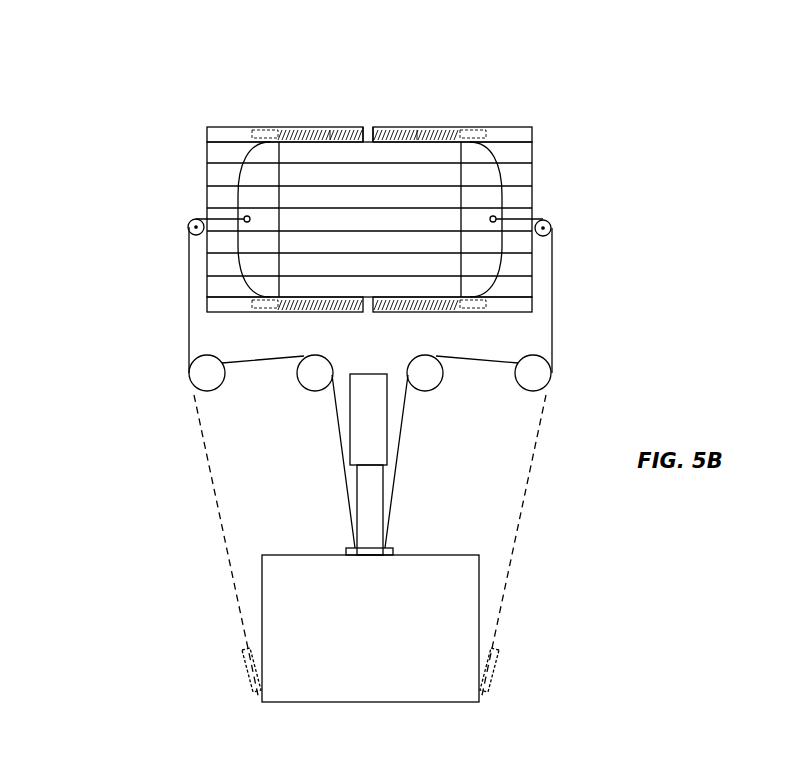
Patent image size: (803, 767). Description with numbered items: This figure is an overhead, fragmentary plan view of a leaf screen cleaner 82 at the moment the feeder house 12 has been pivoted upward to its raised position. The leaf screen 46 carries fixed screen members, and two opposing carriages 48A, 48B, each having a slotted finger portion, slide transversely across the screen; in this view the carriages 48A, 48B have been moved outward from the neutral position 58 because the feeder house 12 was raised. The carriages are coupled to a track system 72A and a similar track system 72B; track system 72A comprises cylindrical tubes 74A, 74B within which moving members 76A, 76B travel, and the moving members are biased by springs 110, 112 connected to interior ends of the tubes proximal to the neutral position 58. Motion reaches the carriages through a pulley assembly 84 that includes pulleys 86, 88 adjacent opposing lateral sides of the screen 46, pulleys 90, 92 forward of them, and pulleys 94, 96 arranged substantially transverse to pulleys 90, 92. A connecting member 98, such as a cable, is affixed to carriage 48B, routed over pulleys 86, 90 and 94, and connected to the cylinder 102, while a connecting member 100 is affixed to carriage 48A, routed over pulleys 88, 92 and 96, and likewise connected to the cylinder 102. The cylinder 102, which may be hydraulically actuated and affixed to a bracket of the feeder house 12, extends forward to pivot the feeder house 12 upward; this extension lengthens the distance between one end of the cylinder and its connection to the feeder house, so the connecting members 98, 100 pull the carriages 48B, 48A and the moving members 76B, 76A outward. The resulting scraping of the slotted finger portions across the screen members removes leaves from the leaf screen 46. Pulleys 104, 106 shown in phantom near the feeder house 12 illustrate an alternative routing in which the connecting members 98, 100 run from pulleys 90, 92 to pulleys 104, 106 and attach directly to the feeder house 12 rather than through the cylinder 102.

The feeder house 12 is at (357, 633).
The leaf screen 46 is at (207, 200).
The carriage 48A is at (492, 177).
The carriage 48B is at (245, 177).
The neutral position 58 is at (370, 112).
The track system 72A is at (546, 137).
The track system 72B is at (562, 307).
The cylindrical tube 74A is at (397, 128).
The cylindrical tube 74B is at (333, 128).
The moving member 76A is at (463, 138).
The moving member 76B is at (263, 135).
The leaf screen cleaner 82 is at (80, 172).
The pulley assembly 84 is at (126, 506).
The pulley 86 is at (190, 230).
The pulley 88 is at (549, 222).
The pulley 90 is at (195, 373).
The pulley 92 is at (545, 377).
The pulley 94 is at (315, 388).
The pulley 96 is at (425, 385).
The connecting member 98 is at (189, 290).
The connecting member 100 is at (553, 287).
The cylinder 102 is at (372, 508).
The pulley 104 is at (247, 668).
The pulley 106 is at (498, 665).
The spring 110 is at (417, 135).
The spring 112 is at (340, 135).